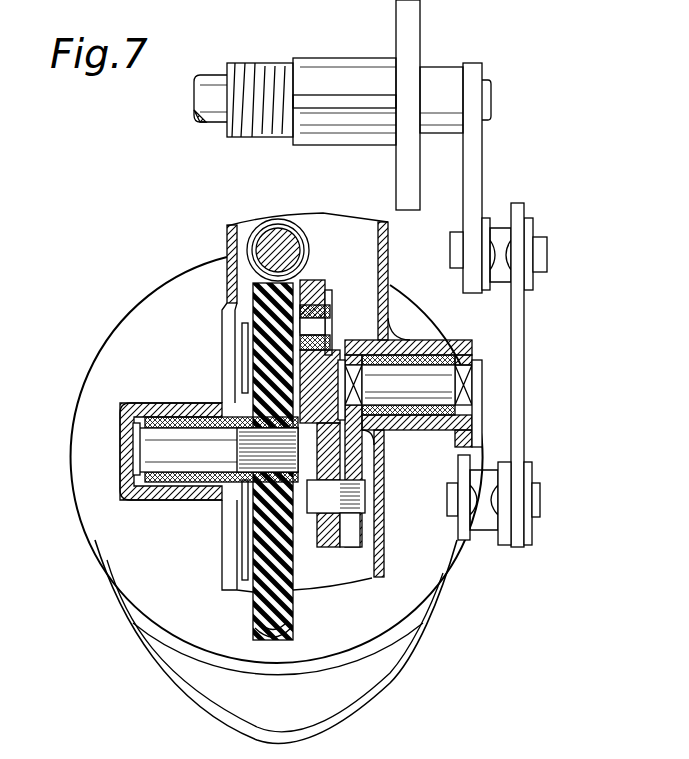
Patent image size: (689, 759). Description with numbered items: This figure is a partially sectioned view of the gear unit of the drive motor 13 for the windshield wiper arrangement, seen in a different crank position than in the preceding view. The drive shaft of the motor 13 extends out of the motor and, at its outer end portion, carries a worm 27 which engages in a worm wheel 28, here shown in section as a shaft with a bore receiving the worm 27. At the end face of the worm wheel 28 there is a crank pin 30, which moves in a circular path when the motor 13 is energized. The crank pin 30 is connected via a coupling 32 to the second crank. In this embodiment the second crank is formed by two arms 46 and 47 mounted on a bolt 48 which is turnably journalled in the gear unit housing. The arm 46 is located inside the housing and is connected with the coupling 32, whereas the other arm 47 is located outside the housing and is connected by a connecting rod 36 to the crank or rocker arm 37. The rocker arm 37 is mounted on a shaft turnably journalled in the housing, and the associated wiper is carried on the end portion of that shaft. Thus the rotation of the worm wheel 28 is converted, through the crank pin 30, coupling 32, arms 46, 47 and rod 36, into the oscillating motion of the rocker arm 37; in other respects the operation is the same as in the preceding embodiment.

The drive motor 13 is at (103, 497).
The worm 27 is at (272, 243).
The worm wheel 28 is at (293, 630).
The crank pin 30 is at (307, 325).
The coupling 32 is at (272, 373).
The connecting rod 36 is at (517, 400).
The rocker arm 37 is at (481, 157).
The arm 46 is at (352, 520).
The arm 47 is at (513, 547).
The bolt 48 is at (415, 375).